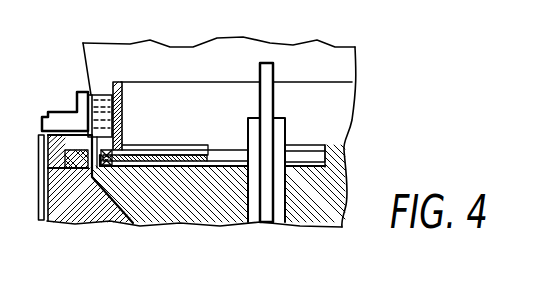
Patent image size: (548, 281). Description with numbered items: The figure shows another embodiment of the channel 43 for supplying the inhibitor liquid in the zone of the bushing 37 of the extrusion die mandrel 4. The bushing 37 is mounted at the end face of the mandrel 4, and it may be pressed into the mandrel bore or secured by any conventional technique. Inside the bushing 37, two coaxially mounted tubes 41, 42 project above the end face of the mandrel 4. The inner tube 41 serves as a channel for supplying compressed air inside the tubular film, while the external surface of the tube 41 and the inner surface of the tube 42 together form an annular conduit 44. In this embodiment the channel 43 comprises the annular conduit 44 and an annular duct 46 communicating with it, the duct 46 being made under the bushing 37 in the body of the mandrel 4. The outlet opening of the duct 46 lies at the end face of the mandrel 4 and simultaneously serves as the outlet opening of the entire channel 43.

The mandrel 4 is at (153, 185).
The bushing 37 is at (113, 82).
The tube 41 is at (275, 67).
The tube 42 is at (285, 118).
The channel 43 is at (252, 148).
The annular conduit 44 is at (285, 178).
The annular duct 46 is at (83, 130).